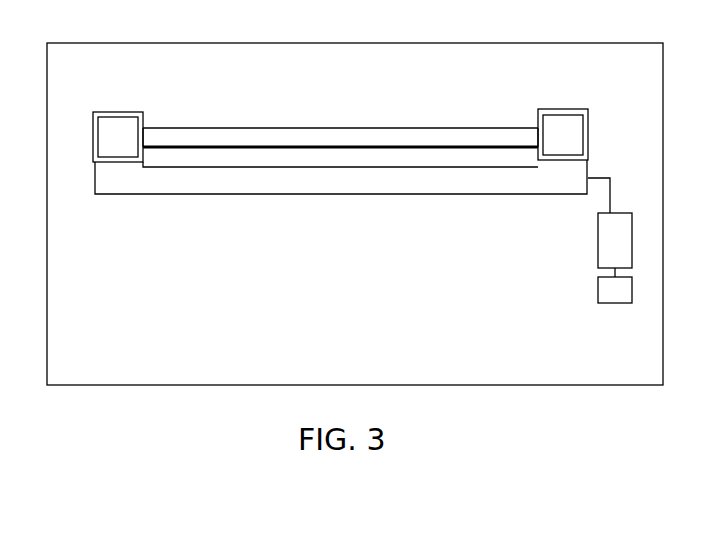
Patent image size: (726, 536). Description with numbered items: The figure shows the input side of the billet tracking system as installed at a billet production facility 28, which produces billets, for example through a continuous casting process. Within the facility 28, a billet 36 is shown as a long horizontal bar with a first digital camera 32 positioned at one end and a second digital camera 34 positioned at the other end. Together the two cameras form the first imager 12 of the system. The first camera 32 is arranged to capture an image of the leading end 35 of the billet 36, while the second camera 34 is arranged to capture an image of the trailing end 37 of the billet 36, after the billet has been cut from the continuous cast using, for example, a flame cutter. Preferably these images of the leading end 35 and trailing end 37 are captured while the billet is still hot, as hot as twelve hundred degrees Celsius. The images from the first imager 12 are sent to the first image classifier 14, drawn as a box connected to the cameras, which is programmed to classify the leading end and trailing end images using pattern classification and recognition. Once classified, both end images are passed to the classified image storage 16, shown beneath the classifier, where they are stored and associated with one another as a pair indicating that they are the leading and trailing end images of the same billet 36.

The first imager 12 is at (359, 187).
The first image classifier 14 is at (610, 223).
The classified image storage 16 is at (615, 285).
The billet production facility 28 is at (355, 214).
The first digital camera 32 is at (118, 137).
The second digital camera 34 is at (563, 134).
The leading end 35 is at (147, 128).
The billet 36 is at (345, 135).
The trailing end 37 is at (533, 140).